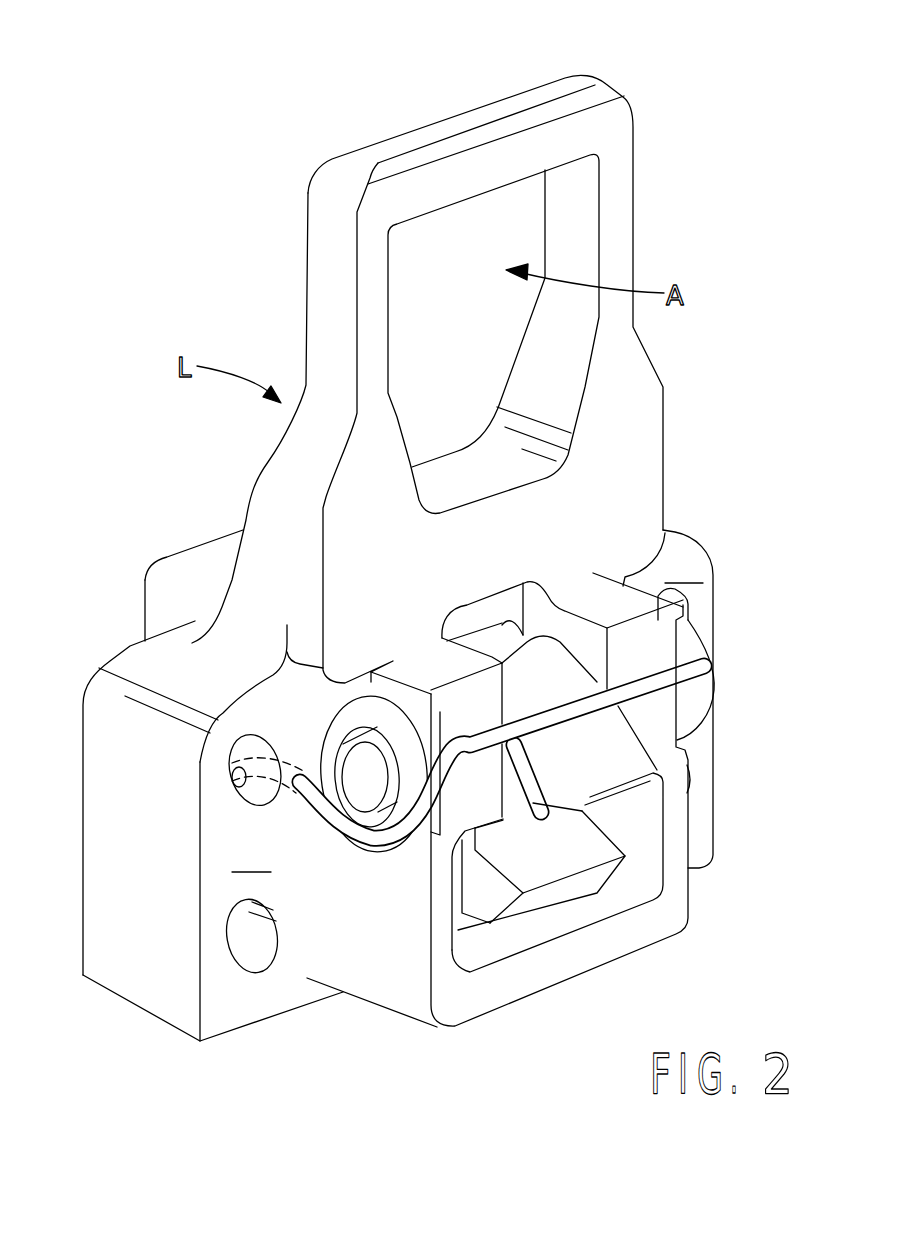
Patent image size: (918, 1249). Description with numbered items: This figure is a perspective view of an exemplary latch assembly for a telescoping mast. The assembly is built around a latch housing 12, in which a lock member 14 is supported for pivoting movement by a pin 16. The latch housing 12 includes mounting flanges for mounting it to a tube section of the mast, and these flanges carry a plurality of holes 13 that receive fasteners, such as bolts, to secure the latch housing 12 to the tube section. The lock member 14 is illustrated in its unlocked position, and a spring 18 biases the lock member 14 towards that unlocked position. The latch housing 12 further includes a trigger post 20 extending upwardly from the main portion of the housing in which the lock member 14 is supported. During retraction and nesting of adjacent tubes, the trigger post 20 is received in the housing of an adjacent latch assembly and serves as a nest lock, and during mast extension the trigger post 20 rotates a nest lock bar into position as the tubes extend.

The latch housing 12 is at (141, 665).
The holes 13 is at (246, 800).
The lock member 14 is at (600, 773).
The pin 16 is at (360, 780).
The spring 18 is at (695, 680).
The trigger post 20 is at (505, 162).